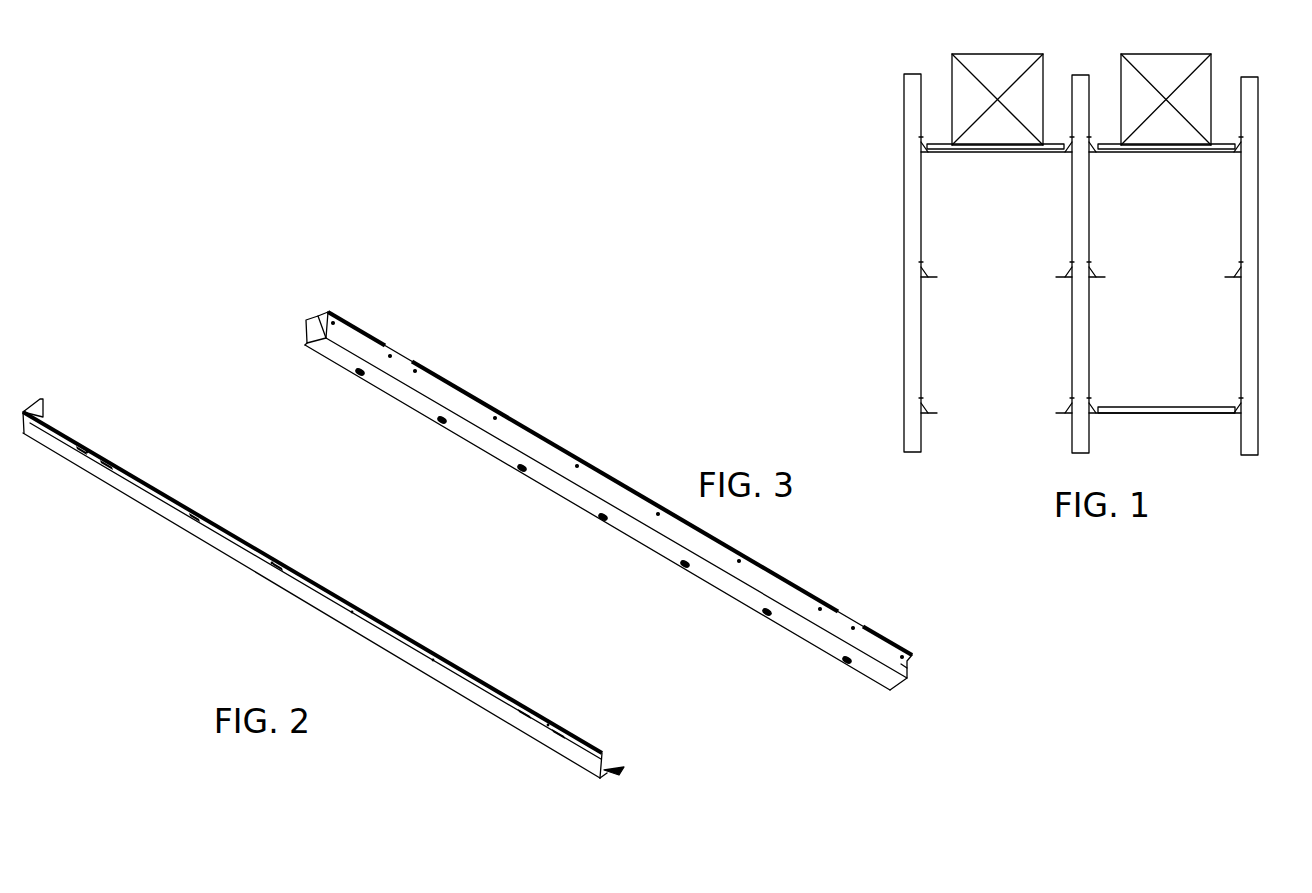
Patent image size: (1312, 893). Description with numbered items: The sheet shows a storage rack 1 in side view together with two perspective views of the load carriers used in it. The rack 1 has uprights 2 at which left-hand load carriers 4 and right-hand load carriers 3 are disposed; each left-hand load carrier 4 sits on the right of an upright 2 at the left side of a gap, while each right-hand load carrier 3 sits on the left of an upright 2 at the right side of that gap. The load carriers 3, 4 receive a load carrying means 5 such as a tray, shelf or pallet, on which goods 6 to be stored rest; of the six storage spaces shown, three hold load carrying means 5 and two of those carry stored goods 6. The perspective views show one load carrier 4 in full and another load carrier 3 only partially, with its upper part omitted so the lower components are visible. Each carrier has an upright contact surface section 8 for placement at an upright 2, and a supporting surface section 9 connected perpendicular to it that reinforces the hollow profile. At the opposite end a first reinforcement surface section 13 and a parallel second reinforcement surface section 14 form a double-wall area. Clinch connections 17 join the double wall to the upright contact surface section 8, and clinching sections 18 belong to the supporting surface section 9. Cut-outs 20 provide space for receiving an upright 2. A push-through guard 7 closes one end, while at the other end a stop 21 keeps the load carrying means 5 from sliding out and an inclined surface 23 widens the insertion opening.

In FIG. 1, the rack 1 is at (1108, 238).
In FIG. 1, the upright 2 is at (1093, 264).
In FIG. 1, the right-hand load carrier 3 is at (1143, 292).
In FIG. 3, the right-hand load carrier 3 is at (658, 508).
In FIG. 1, the left-hand load carrier 4 is at (1080, 292).
In FIG. 2, the left-hand load carrier 4 is at (349, 629).
In FIG. 1, the load carrying means 5 is at (1081, 295).
In FIG. 1, the stored goods 6 is at (1081, 83).
In FIG. 3, the push-through guard 7 is at (326, 301).
In FIG. 3, the upright contact surface section 8 is at (616, 508).
In FIG. 3, the supporting surface section 9 is at (597, 517).
In FIG. 3, the first reinforcement surface section 13 is at (919, 644).
In FIG. 2, the second reinforcement surface section 14 is at (312, 595).
In FIG. 3, the clinch connections 17 is at (618, 490).
In FIG. 3, the clinching sections 18 is at (603, 516).
In FIG. 3, the cut-out 20 is at (620, 475).
In FIG. 2, the stop 21 is at (349, 588).
In FIG. 2, the inclined surface 23 is at (634, 789).